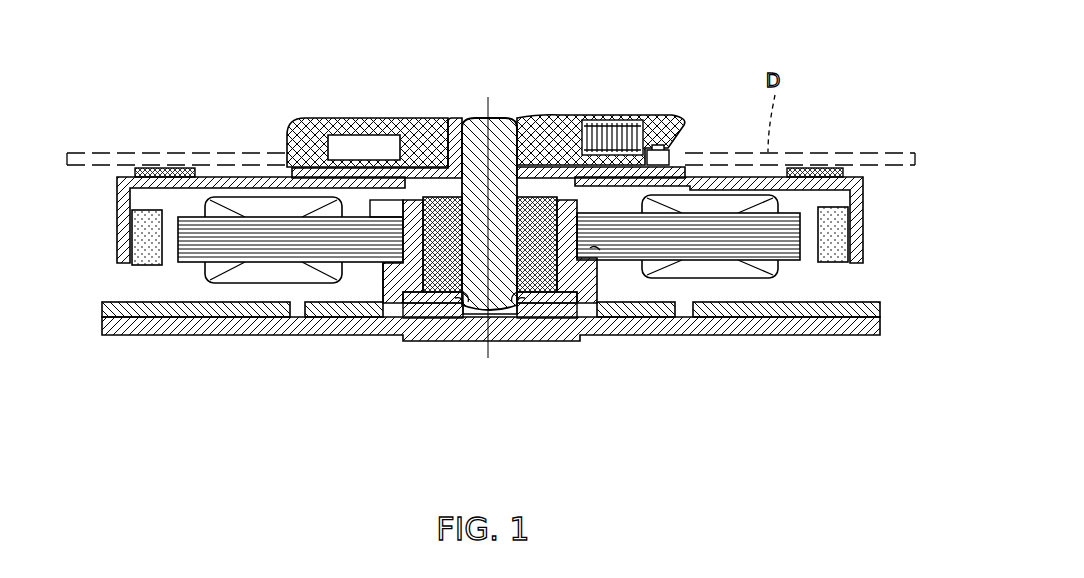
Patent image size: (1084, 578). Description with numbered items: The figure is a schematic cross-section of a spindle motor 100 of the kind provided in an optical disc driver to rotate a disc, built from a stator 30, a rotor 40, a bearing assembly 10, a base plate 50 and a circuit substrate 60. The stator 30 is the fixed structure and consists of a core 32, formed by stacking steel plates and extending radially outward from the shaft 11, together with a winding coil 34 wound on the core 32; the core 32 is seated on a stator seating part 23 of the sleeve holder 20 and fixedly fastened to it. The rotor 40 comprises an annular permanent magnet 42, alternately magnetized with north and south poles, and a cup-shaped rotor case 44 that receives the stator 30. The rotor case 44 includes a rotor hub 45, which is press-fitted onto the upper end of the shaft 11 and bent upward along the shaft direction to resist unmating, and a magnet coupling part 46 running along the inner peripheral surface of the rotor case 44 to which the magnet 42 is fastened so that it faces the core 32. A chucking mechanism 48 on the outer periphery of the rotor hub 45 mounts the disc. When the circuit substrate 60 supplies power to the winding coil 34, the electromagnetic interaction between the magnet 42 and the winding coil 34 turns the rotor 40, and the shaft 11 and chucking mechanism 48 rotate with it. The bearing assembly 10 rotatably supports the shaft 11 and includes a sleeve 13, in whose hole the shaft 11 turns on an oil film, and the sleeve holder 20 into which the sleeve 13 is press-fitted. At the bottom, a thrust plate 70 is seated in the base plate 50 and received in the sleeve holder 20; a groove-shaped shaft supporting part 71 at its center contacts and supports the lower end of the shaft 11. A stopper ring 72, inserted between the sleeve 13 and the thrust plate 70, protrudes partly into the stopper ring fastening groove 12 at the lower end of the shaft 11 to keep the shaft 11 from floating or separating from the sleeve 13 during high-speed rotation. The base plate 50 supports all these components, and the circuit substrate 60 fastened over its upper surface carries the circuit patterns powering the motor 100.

The bearing assembly 10 is at (483, 297).
The shaft 11 is at (489, 269).
The stopper ring fastening groove 12 is at (505, 340).
The sleeve 13 is at (425, 340).
The sleeve holder 20 is at (385, 323).
The stator seating part 23 is at (595, 250).
The stator 30 is at (504, 334).
The core 32 is at (780, 248).
The winding coil 34 is at (725, 272).
The rotor 40 is at (116, 178).
The magnet 42 is at (860, 218).
The rotor case 44 is at (489, 89).
The rotor hub 45 is at (455, 118).
The magnet coupling part 46 is at (156, 168).
The chucking mechanism 48 is at (580, 116).
The base plate 50 is at (298, 338).
The circuit substrate 60 is at (176, 323).
The thrust plate 70 is at (578, 318).
The shaft supporting part 71 is at (540, 340).
The stopper ring 72 is at (570, 340).
The motor 100 is at (668, 98).